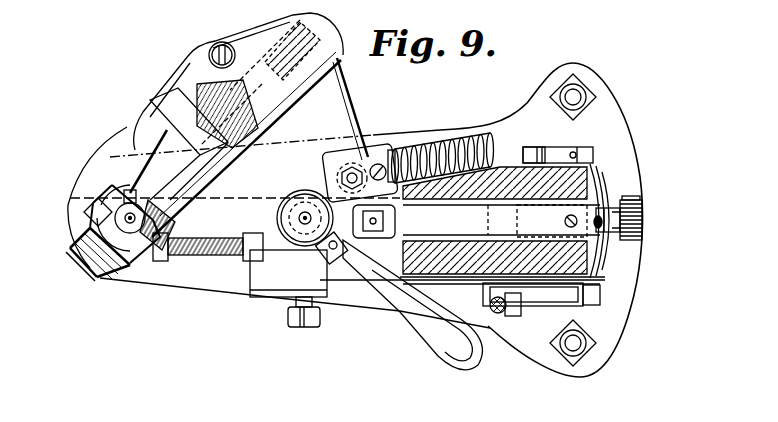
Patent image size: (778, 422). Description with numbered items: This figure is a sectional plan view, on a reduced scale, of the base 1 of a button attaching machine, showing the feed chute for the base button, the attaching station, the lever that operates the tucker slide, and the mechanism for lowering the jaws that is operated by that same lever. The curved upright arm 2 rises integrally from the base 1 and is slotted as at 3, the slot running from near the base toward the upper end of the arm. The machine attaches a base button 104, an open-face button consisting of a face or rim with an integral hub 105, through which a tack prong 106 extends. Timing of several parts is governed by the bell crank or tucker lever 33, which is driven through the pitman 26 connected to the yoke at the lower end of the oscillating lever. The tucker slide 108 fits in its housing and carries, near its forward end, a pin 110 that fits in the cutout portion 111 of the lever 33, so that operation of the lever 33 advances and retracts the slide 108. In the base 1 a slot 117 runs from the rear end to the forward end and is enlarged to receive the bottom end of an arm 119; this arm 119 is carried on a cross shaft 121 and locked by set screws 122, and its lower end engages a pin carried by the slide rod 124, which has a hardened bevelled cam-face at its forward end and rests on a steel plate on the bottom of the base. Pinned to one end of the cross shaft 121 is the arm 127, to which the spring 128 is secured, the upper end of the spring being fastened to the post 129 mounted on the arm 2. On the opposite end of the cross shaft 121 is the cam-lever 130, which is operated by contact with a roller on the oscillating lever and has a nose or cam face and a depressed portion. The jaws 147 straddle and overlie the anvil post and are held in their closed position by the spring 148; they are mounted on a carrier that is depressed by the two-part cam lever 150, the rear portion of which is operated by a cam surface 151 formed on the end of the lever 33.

The base 1 is at (353, 292).
The curved upright arm 2 is at (500, 167).
The slot 3 is at (512, 192).
The pitman 26 is at (455, 140).
The bell crank or tucker lever 33 is at (313, 123).
The base button 104 is at (80, 262).
The hub 105 is at (90, 279).
The tack prong 106 is at (130, 234).
The slide 108 is at (255, 87).
The pin 110 is at (335, 72).
The cutout portion 111 is at (335, 93).
The slot 117 is at (642, 210).
The arm 119 is at (642, 226).
The cross shaft 121 is at (600, 320).
The set screws 122 is at (600, 229).
The slide rod 124 is at (277, 146).
The arm 127 is at (537, 292).
The spring 128 is at (480, 284).
The post 129 is at (488, 298).
The cam-lever 130 is at (550, 147).
The jaws 147 is at (128, 193).
The spring 148 is at (84, 212).
The cam lever 150 is at (223, 268).
The cam surface 151 is at (250, 207).